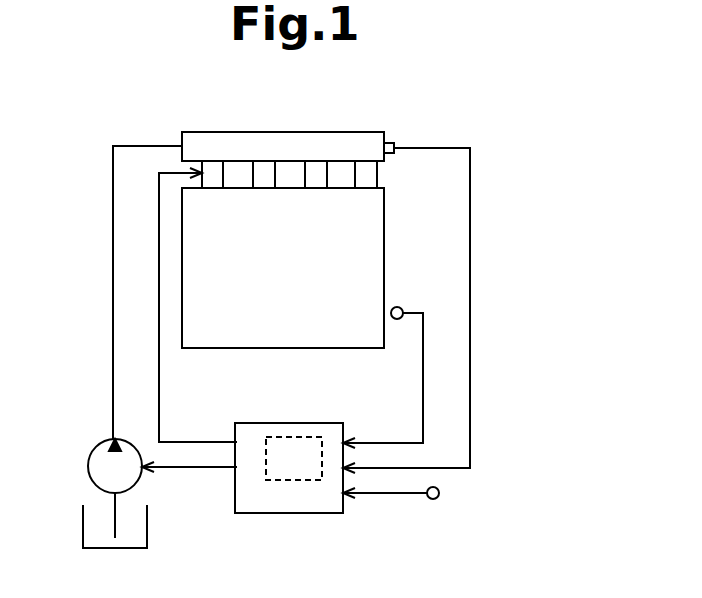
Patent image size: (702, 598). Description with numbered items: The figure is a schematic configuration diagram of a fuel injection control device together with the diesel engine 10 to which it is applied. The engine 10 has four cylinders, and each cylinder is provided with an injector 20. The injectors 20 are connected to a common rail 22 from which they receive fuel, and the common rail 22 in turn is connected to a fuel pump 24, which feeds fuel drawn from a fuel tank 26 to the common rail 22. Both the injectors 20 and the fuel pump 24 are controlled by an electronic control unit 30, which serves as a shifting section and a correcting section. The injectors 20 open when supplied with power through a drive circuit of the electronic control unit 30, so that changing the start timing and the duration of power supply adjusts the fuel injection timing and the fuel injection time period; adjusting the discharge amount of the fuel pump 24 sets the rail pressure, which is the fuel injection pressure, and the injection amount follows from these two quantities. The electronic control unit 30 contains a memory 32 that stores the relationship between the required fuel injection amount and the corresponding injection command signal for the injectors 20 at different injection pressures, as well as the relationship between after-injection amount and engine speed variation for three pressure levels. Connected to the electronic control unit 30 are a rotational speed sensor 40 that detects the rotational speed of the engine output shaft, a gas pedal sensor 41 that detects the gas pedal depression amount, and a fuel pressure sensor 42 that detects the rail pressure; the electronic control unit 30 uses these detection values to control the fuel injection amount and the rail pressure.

The diesel engine 10 is at (385, 222).
The injector 20 is at (253, 170).
The common rail 22 is at (340, 132).
The fuel pump 24 is at (89, 452).
The fuel tank 26 is at (147, 515).
The electronic control unit 30 is at (255, 513).
The memory 32 is at (293, 480).
The rotational speed sensor 40 is at (399, 307).
The gas pedal sensor 41 is at (439, 493).
The fuel pressure sensor 42 is at (392, 143).